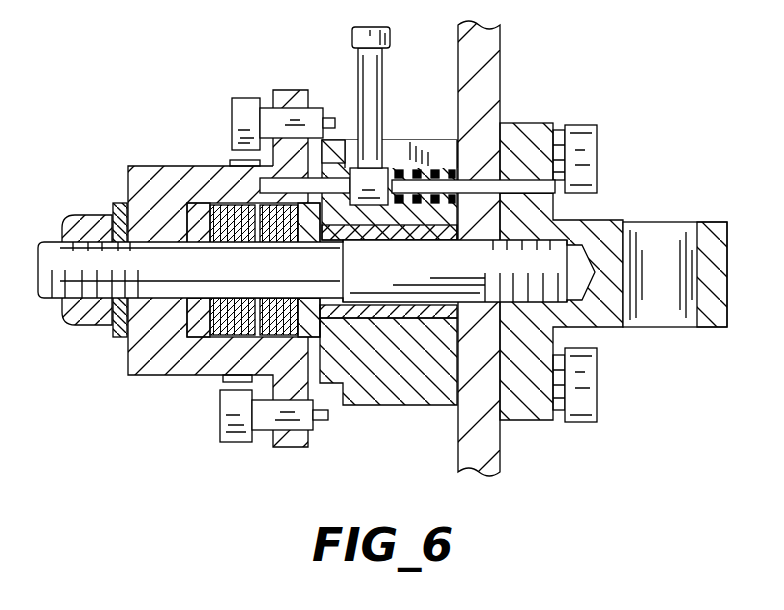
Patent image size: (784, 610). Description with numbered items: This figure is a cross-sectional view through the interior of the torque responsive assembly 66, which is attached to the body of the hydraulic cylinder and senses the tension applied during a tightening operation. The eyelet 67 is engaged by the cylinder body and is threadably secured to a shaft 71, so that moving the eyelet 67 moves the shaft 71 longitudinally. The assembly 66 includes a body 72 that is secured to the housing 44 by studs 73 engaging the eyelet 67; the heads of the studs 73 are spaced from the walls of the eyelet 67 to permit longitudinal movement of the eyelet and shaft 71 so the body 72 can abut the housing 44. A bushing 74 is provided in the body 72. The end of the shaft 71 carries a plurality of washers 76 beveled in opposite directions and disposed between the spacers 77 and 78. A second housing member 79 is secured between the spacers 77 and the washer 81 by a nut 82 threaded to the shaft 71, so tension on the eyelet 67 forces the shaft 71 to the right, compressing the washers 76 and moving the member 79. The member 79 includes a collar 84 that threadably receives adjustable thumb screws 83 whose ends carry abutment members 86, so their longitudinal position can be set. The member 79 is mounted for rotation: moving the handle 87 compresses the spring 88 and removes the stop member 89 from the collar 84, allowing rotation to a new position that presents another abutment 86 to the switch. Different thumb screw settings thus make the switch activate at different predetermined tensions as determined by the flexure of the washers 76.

The housing 44 is at (488, 52).
The torque responsive assembly 66 is at (575, 433).
The eyelet 67 is at (603, 243).
The shaft 71 is at (181, 265).
The body 72 is at (440, 378).
The studs 73 is at (583, 380).
The bushing 74 is at (388, 310).
The washers 76 is at (220, 340).
The spacers 77 is at (197, 210).
The spacers 78 is at (323, 168).
The second housing member 79 is at (170, 190).
The washer 81 is at (118, 333).
The nut 82 is at (85, 225).
The thumb screws 83 is at (252, 113).
The collar 84 is at (295, 90).
The abutment member 86 is at (324, 425).
The handle 87 is at (392, 36).
The spring 88 is at (502, 121).
The stop member 89 is at (343, 163).